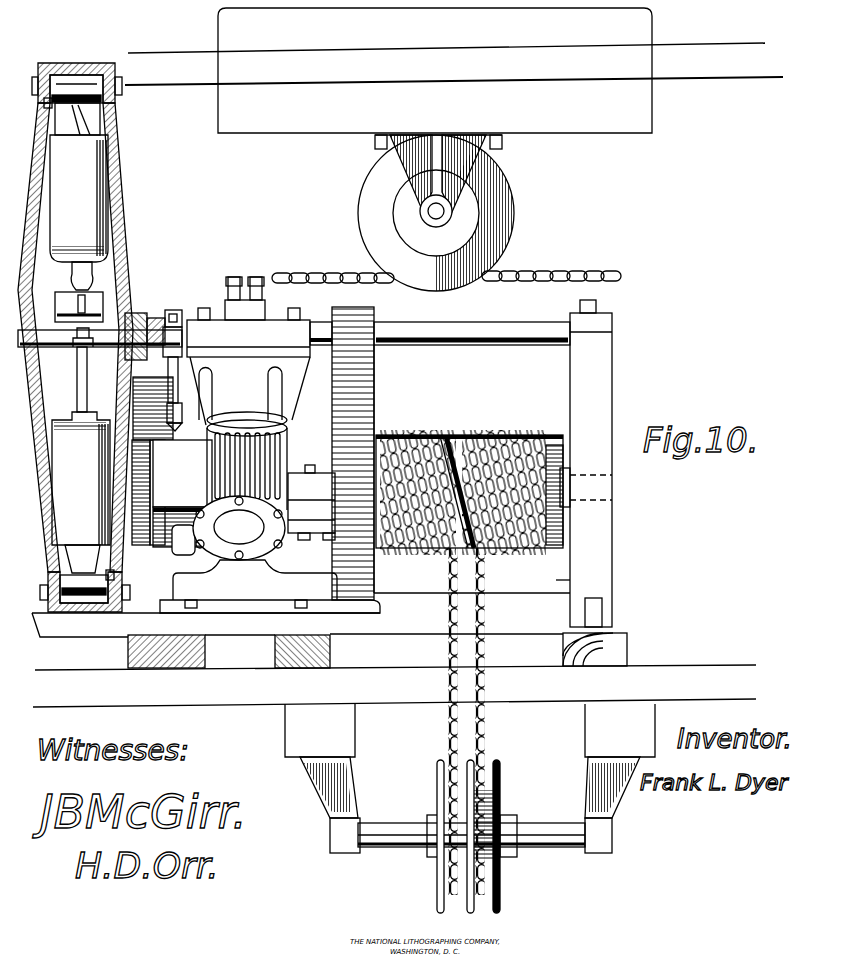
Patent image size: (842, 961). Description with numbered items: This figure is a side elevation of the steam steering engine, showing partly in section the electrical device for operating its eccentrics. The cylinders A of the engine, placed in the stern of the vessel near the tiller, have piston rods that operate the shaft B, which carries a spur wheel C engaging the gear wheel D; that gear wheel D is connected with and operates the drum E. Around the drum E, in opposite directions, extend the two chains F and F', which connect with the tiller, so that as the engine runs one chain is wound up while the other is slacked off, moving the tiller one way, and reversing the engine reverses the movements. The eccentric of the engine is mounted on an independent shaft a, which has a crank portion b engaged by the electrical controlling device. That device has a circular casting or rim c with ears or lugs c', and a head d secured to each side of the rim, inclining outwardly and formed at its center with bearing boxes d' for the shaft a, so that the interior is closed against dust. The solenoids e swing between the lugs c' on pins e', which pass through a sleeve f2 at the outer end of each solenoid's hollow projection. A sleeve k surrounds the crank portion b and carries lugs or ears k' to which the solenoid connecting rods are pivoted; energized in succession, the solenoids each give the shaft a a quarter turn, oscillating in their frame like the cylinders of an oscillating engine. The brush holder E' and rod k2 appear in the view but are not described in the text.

The circular casting or rim c is at (77, 333).
The ears or lugs c' is at (97, 592).
The sleeve f2 is at (83, 88).
The pins e' is at (86, 340).
The solenoids e is at (80, 338).
The head d is at (85, 337).
The sleeve k is at (105, 281).
The bearing boxes d' is at (169, 296).
The crank portion b is at (60, 311).
The independent shaft a is at (136, 322).
The brush holder E' is at (179, 359).
The lugs or ears k' is at (75, 352).
The rod k2 is at (87, 385).
The cylinders A is at (256, 445).
The spur wheel C is at (374, 313).
The shaft B is at (493, 463).
The gear wheel D is at (374, 404).
The drum E is at (569, 457).
The chain F is at (365, 572).
The chain F' is at (549, 564).